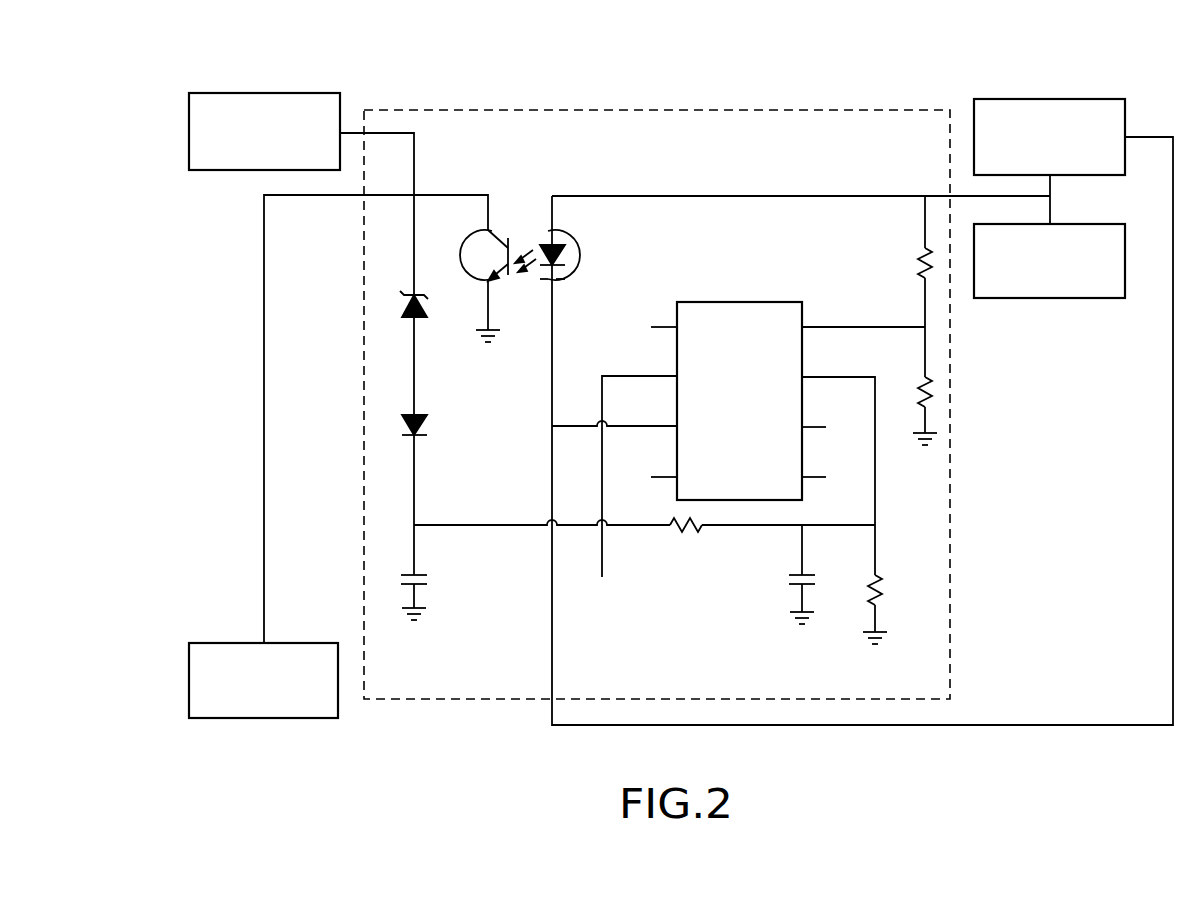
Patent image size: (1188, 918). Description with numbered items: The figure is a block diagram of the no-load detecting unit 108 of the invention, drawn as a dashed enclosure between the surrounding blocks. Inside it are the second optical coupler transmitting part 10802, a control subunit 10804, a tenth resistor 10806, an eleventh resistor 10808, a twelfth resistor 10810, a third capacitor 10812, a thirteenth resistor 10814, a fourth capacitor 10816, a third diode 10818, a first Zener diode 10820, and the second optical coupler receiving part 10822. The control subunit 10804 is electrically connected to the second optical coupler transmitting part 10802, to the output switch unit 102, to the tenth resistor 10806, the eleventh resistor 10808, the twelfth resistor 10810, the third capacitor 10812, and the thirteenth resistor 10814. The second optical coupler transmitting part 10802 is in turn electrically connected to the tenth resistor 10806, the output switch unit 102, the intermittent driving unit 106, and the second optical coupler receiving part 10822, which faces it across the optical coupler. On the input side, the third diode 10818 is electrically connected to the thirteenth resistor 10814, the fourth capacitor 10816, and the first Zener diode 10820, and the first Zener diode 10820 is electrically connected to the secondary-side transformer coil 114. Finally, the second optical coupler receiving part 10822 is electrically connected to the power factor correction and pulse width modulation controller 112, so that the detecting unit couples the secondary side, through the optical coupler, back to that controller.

The output switch unit 102 is at (1050, 100).
The intermittent driving unit 106 is at (1050, 298).
The no-load detecting unit 108 is at (656, 115).
The power factor correction and pulse width modulation controller 112 is at (238, 645).
The secondary-side transformer coil 114 is at (265, 95).
The second optical coupler transmitting part 10802 is at (562, 242).
The control subunit 10804 is at (739, 306).
The tenth resistor 10806 is at (917, 262).
The eleventh resistor 10808 is at (917, 391).
The twelfth resistor 10810 is at (880, 584).
The third capacitor 10812 is at (789, 578).
The thirteenth resistor 10814 is at (684, 538).
The fourth capacitor 10816 is at (428, 580).
The third diode 10818 is at (427, 430).
The first Zener diode 10820 is at (425, 299).
The second optical coupler receiving part 10822 is at (508, 236).